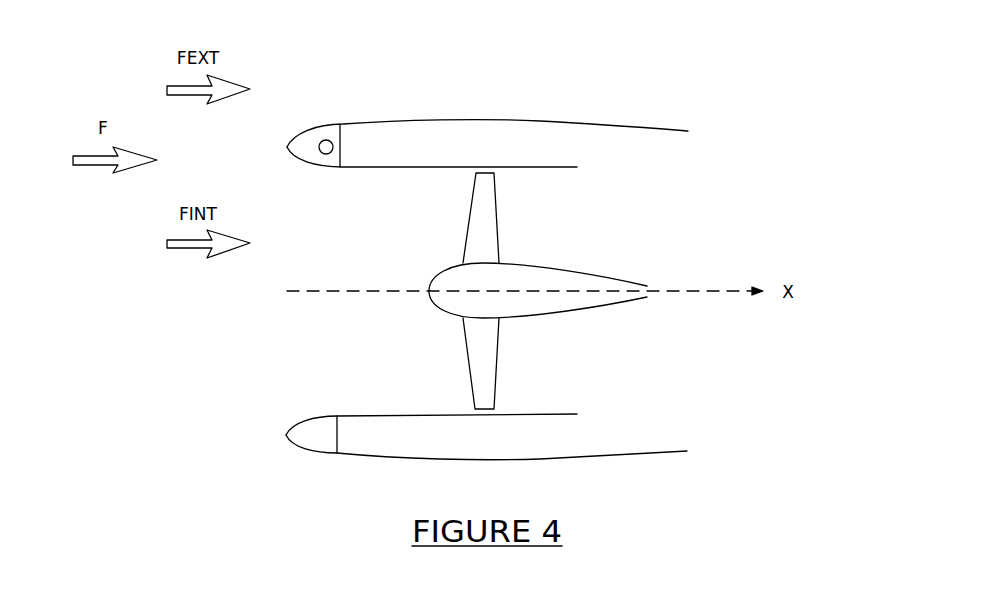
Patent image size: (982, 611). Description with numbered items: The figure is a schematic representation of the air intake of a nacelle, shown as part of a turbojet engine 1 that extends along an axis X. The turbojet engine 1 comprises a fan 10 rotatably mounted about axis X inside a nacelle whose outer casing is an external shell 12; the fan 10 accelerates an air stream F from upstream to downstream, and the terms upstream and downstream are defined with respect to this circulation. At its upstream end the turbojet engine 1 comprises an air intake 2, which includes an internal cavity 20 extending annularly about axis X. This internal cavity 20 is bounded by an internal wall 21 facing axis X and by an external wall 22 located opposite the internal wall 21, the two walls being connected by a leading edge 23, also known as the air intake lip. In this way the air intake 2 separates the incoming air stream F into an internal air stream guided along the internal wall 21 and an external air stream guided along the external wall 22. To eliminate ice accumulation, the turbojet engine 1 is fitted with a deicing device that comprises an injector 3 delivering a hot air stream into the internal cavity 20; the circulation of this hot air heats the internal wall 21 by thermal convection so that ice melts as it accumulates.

The turbojet engine 1 is at (791, 184).
The air intake 2 is at (288, 427).
The injector 3 is at (325, 139).
The fan 10 is at (469, 237).
The external shell 12 is at (407, 410).
The internal cavity 20 is at (319, 427).
The internal wall 21 is at (306, 166).
The external wall 22 is at (325, 125).
The leading edge 23 is at (292, 141).